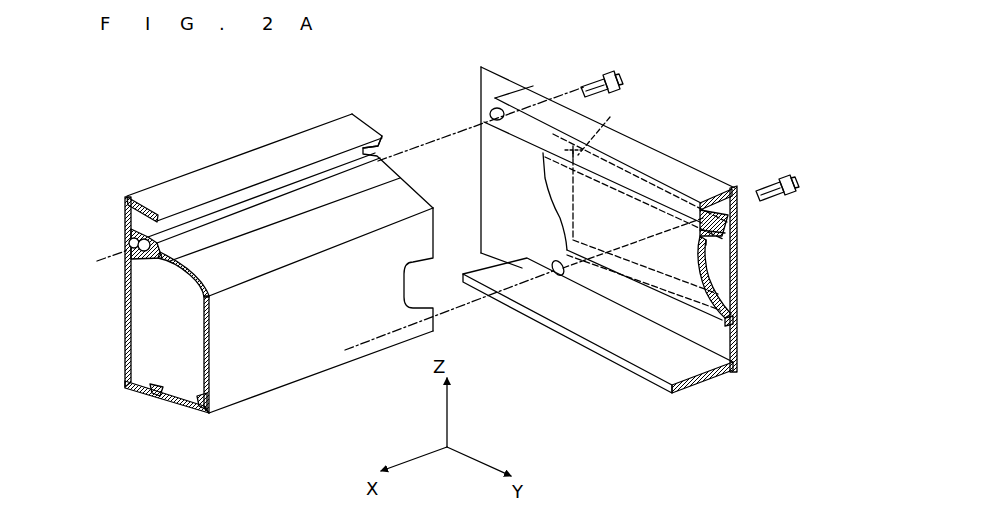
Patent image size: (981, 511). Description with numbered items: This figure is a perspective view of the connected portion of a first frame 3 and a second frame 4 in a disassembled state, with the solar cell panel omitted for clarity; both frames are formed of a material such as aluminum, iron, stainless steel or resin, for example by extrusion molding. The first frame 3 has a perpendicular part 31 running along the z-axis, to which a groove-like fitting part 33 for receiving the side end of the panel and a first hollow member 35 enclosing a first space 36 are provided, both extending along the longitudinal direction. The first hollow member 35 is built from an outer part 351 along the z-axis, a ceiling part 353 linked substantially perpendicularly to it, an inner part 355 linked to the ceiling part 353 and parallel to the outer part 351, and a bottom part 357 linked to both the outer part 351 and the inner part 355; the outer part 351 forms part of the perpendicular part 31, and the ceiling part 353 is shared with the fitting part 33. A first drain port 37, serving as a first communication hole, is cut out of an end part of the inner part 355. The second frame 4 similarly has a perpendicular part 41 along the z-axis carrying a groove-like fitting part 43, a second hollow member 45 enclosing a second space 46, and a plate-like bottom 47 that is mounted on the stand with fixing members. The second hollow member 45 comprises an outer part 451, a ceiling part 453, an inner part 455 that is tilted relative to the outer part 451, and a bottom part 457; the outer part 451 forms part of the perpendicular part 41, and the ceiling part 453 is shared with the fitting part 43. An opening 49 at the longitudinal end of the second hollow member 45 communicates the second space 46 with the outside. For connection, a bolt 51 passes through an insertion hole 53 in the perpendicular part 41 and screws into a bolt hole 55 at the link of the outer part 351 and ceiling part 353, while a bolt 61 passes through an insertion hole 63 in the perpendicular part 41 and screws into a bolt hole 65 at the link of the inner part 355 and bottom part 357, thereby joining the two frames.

The first frame 3 is at (267, 147).
The perpendicular part 31 is at (125, 233).
The fitting part 33 is at (374, 148).
The first hollow member 35 is at (72, 313).
The outer part 351 is at (127, 315).
The ceiling part 353 is at (175, 268).
The inner part 355 is at (207, 310).
The bottom part 357 is at (140, 393).
The first space 36 is at (185, 345).
The first drain port 37 is at (422, 282).
The second frame 4 is at (660, 147).
The perpendicular part 41 is at (735, 348).
The fitting part 43 is at (737, 187).
The second hollow member 45 is at (805, 237).
The outer part 451 is at (712, 233).
The ceiling part 453 is at (708, 263).
The inner part 455 is at (713, 285).
The bottom part 457 is at (723, 318).
The second space 46 is at (723, 233).
The bottom 47 is at (710, 387).
The opening 49 is at (610, 117).
The bolt 51 is at (595, 68).
The insertion hole 53 is at (488, 113).
The bolt hole 55 is at (143, 263).
The bolt 61 is at (790, 170).
The insertion hole 63 is at (562, 278).
The bolt hole 65 is at (197, 410).